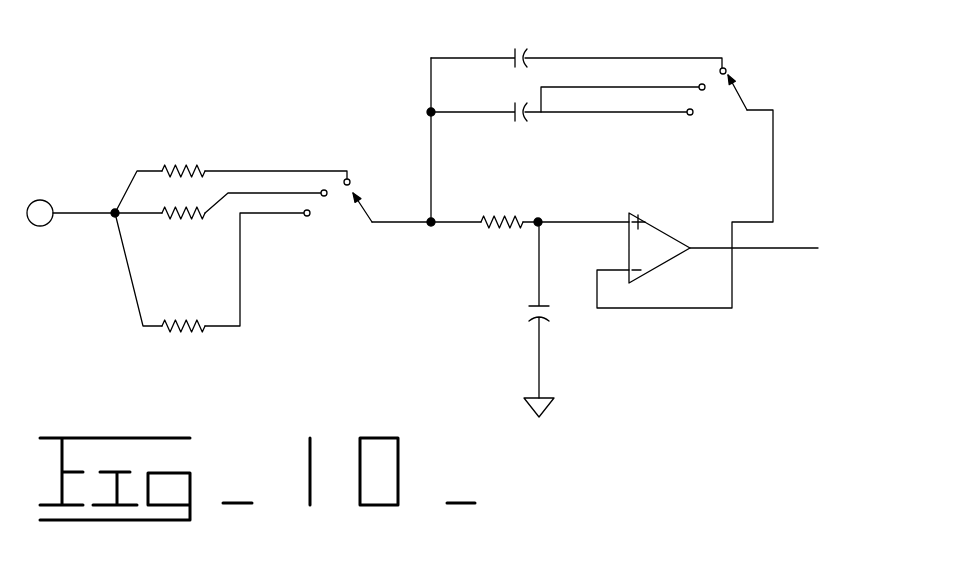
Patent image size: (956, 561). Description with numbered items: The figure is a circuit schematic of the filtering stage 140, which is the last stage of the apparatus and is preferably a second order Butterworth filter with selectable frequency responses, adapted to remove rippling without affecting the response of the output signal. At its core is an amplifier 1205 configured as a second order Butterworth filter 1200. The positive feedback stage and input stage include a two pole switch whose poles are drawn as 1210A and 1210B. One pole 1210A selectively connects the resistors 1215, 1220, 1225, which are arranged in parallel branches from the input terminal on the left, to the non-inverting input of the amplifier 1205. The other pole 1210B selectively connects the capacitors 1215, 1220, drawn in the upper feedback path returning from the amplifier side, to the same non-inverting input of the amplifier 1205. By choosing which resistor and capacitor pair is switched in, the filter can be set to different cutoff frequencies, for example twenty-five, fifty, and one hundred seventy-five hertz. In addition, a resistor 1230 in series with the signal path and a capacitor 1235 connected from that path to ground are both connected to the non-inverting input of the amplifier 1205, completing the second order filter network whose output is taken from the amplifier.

The second order Butterworth filter 1200 is at (160, 76).
The resistor / capacitor 1215 is at (196, 166).
The resistor / capacitor 1220 is at (171, 219).
The resistor 1225 is at (171, 332).
The pole of two pole switch 1210A is at (351, 193).
The pole of two pole switch 1210B is at (733, 78).
The resistor 1230 is at (484, 210).
The capacitor 1235 is at (530, 303).
The amplifier 1205 is at (639, 214).
The filtering stage 140 is at (737, 392).